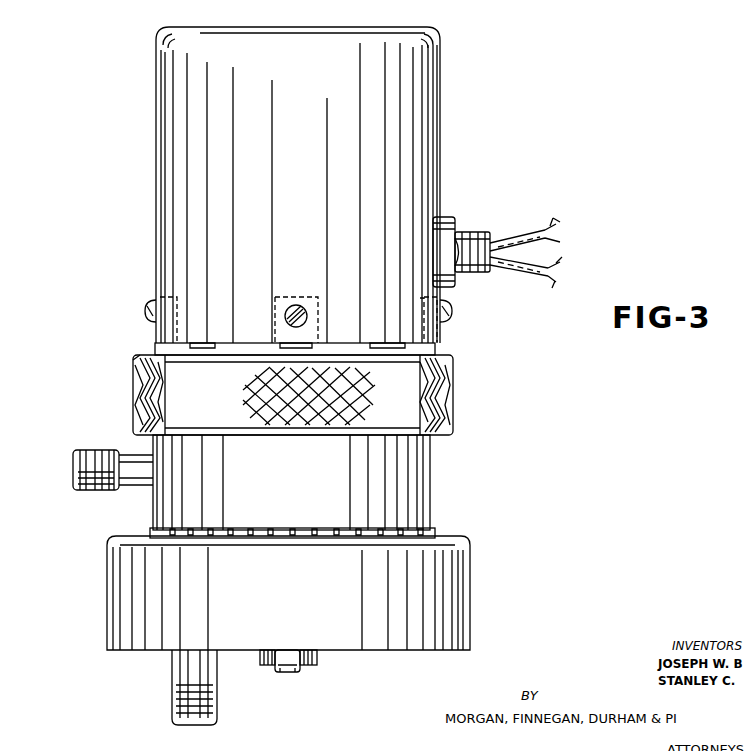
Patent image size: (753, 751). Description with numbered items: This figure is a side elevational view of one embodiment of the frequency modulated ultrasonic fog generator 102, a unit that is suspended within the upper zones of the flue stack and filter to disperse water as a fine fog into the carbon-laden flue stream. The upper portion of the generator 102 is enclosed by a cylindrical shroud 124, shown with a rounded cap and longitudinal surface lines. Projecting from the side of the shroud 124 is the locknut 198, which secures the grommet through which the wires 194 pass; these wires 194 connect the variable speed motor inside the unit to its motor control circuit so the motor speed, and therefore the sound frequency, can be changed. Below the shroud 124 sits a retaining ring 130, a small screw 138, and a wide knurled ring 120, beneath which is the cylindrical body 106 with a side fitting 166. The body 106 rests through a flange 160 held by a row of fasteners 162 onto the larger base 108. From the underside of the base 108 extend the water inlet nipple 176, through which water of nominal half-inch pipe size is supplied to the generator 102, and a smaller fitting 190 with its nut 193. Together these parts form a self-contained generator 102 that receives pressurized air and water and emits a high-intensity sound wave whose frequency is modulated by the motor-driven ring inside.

The frequency modulated ultrasonic fog generator 102 is at (487, 394).
The housing body 106 is at (449, 486).
The base 108 is at (493, 596).
The knurled locking ring 120 is at (455, 418).
The shroud 124 is at (418, 130).
The retaining ring 130 is at (445, 348).
The screw 138 is at (443, 311).
The flange 160 is at (432, 532).
The fastening bolts 162 is at (135, 535).
The side plug 166 is at (90, 450).
The water inlet nipple 176 is at (218, 712).
The fitting 190 is at (287, 672).
The nut 193 is at (318, 658).
The wires 194 is at (552, 254).
The locknut 198 is at (452, 217).